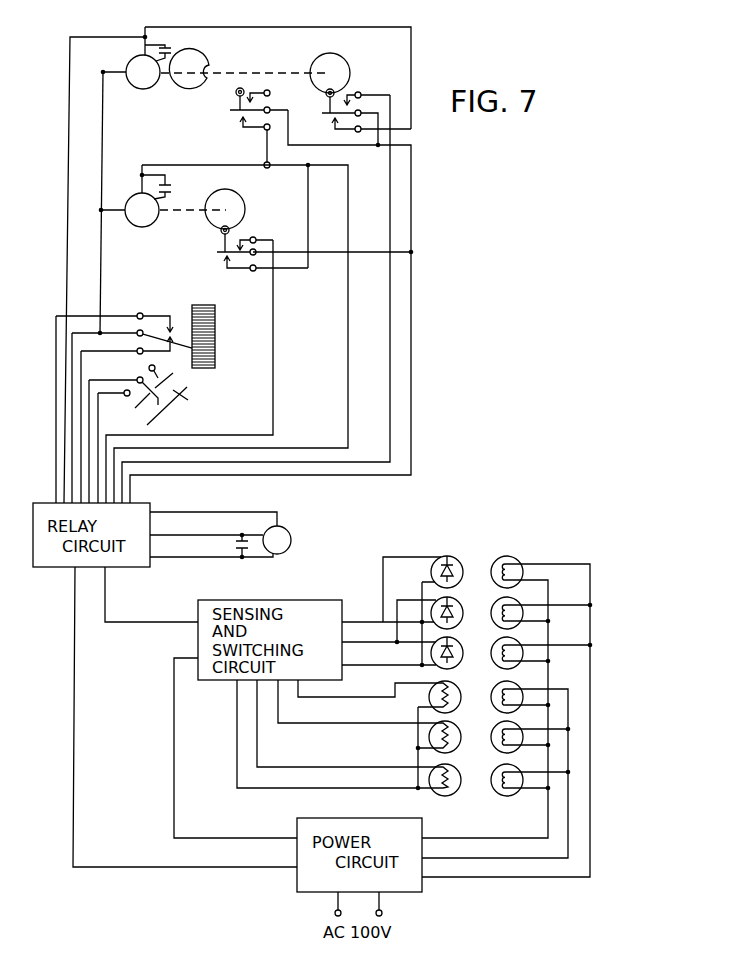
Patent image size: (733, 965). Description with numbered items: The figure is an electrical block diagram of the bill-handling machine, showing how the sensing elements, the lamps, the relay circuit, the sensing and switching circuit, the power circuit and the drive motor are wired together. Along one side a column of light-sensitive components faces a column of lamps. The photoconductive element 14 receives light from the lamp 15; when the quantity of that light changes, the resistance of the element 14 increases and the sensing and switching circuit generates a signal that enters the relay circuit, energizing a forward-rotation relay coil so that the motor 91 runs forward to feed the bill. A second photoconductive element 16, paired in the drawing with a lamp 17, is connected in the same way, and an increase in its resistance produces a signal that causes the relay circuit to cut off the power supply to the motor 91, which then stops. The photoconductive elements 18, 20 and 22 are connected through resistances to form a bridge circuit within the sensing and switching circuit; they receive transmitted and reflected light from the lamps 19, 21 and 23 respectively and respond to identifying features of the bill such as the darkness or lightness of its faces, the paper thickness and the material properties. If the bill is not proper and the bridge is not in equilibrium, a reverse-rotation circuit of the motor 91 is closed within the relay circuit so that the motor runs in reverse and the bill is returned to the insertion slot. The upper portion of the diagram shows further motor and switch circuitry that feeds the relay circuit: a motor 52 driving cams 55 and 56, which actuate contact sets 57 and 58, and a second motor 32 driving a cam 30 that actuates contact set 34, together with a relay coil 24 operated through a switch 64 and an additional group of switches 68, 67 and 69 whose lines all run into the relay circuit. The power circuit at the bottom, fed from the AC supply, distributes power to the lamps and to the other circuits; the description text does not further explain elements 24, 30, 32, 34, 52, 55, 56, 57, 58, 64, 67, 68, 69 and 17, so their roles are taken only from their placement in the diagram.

The photoconductive element 14 is at (457, 558).
The lamp 15 is at (510, 557).
The photoconductive element 16 is at (460, 649).
The lamp 17 is at (518, 650).
The photoconductive element 18 is at (459, 690).
The lamp 19 is at (517, 690).
The photoconductive element 20 is at (459, 732).
The lamp 21 is at (517, 733).
The photoconductive element 22 is at (459, 775).
The lamp 23 is at (517, 775).
The relay coil 24 is at (216, 312).
The cam 30 is at (251, 205).
The motor 32 is at (157, 226).
The switch 34 is at (254, 272).
The motor 52 is at (154, 88).
The cam 55 is at (342, 62).
The cam 56 is at (243, 61).
The switch 57 is at (361, 93).
The switch 58 is at (242, 120).
The switch 64 is at (143, 313).
The switch 67 is at (186, 396).
The switch 68 is at (149, 368).
The interlock 69 is at (163, 403).
The motor 91 is at (288, 550).